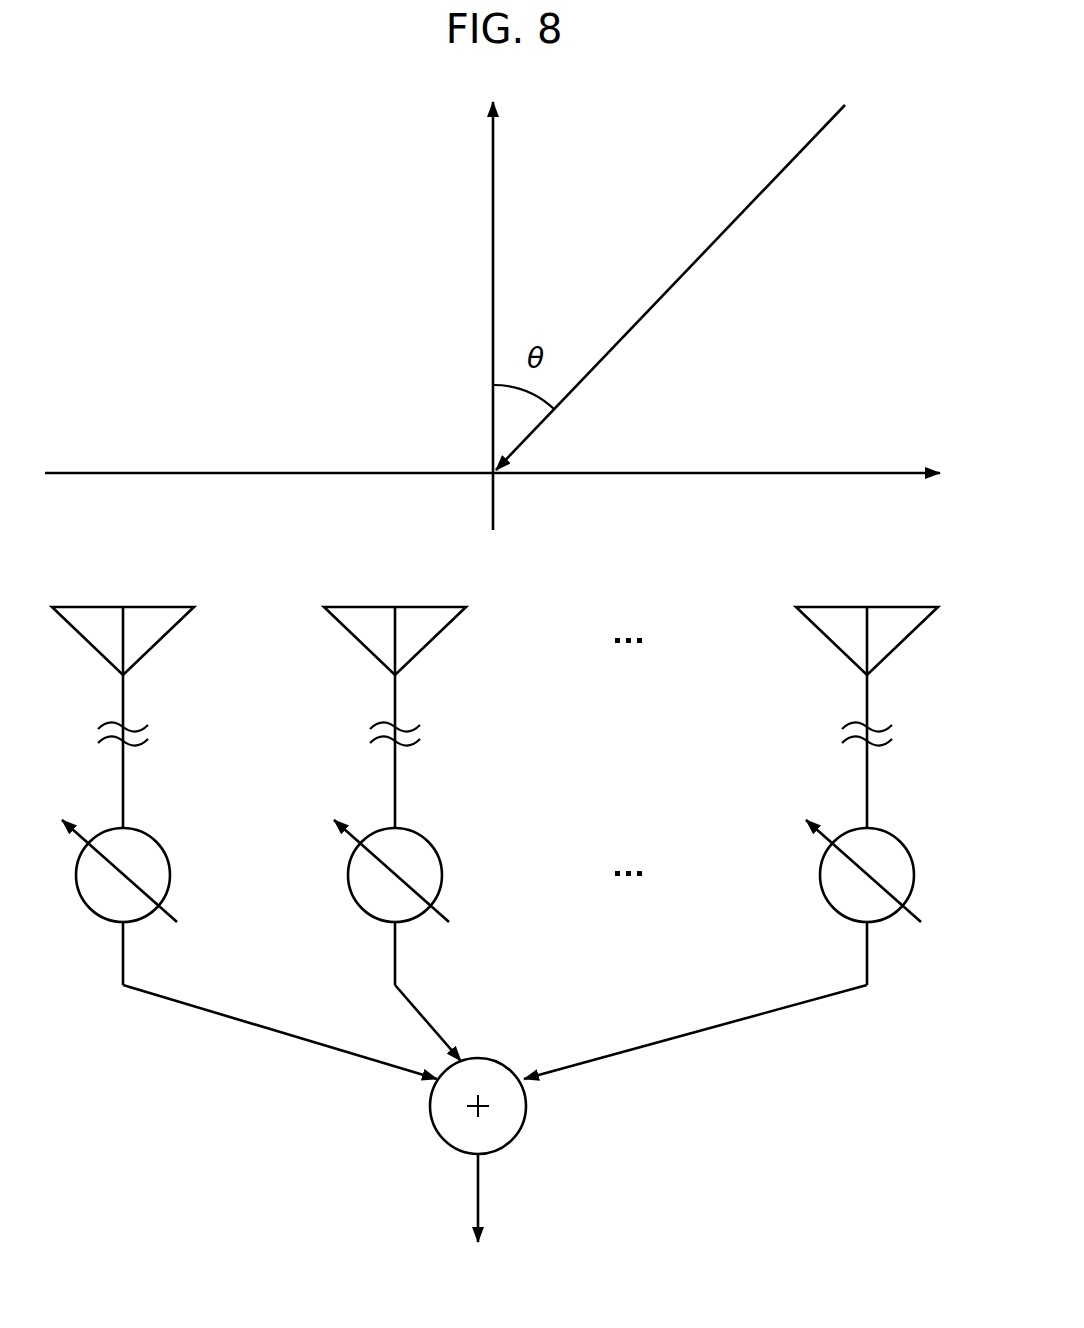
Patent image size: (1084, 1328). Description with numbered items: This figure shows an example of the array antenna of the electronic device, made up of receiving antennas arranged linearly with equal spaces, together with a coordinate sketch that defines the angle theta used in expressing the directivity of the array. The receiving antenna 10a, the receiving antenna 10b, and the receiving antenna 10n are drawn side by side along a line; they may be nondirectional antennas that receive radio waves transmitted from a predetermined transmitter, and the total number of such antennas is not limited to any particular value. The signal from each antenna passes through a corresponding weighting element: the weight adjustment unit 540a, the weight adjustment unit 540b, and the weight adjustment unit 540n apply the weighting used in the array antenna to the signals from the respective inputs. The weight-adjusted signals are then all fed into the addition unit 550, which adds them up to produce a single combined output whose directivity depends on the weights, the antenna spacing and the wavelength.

The receiving antenna 10a is at (163, 642).
The receiving antenna 10b is at (435, 642).
The receiving antenna 10n is at (907, 642).
The weight adjustment unit 540a is at (162, 838).
The weight adjustment unit 540b is at (434, 838).
The weight adjustment unit 540n is at (906, 838).
The addition unit 550 is at (515, 1140).